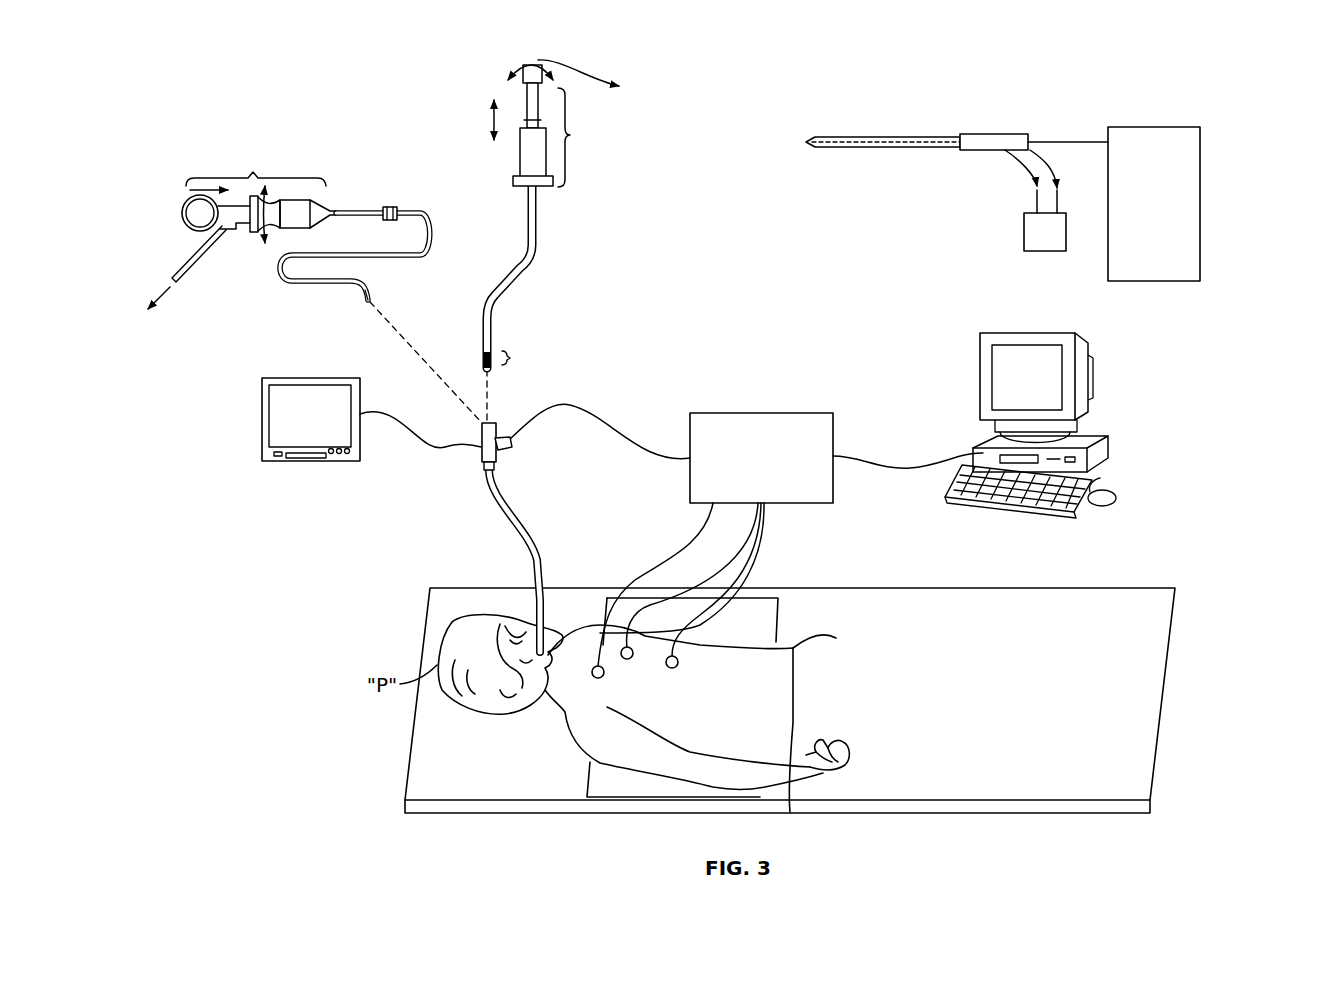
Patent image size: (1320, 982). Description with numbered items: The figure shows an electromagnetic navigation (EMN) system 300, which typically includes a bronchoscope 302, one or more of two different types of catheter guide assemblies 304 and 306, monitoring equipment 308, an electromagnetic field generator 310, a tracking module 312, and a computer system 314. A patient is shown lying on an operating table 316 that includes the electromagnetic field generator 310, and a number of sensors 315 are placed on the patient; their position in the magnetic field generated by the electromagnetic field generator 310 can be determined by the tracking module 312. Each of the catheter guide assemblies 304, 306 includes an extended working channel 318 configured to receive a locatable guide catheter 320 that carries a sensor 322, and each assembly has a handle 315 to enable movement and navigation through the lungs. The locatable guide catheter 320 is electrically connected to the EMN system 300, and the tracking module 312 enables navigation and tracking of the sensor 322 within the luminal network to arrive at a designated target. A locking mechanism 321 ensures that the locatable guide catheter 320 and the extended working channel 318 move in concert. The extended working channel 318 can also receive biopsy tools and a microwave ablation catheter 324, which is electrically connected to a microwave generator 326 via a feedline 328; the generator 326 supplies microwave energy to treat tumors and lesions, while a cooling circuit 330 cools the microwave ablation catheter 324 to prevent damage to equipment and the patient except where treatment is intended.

The EMN system 300 is at (790, 313).
The bronchoscope 302 is at (496, 512).
The catheter guide assembly 304 is at (216, 161).
The catheter guide assembly 306 is at (556, 232).
The monitoring equipment 308 is at (278, 461).
The electromagnetic field generator 310 is at (603, 797).
The tracking module 312 is at (800, 413).
The computer system 314 is at (1098, 383).
The sensors / handle 315 is at (693, 698).
The operating table 316 is at (426, 745).
The extended working channel 318 is at (440, 233).
The locatable guide catheter 320 is at (356, 211).
The locking mechanism 321 is at (397, 208).
The sensor 322 is at (366, 302).
The microwave ablation catheter 324 is at (956, 121).
The microwave generator 326 is at (1200, 193).
The feedline 328 is at (1055, 140).
The cooling circuit 330 is at (1024, 233).